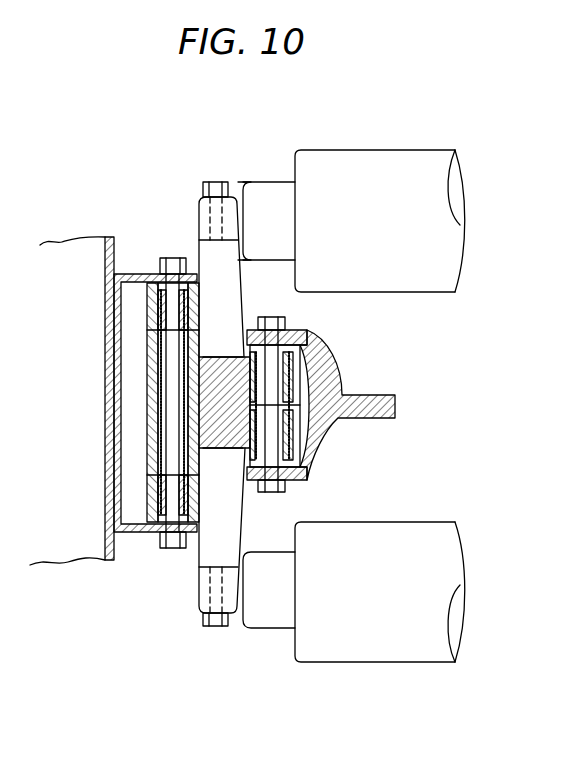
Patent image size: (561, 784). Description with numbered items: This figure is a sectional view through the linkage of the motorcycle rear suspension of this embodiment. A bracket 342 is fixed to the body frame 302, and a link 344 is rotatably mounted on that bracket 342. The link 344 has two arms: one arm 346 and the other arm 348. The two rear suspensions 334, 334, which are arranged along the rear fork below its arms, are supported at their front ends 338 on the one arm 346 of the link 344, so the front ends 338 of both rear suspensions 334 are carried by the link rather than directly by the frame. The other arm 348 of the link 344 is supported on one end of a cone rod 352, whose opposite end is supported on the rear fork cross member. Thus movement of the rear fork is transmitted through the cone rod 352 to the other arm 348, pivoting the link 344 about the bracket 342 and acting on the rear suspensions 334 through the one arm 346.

The body frame 302 is at (105, 536).
The rear suspension 334 is at (351, 150).
The front end 338 is at (200, 212).
The bracket 342 is at (137, 532).
The link 344 is at (245, 305).
The arm 346 is at (202, 258).
The other arm 348 is at (292, 437).
The cone rod 352 is at (370, 396).